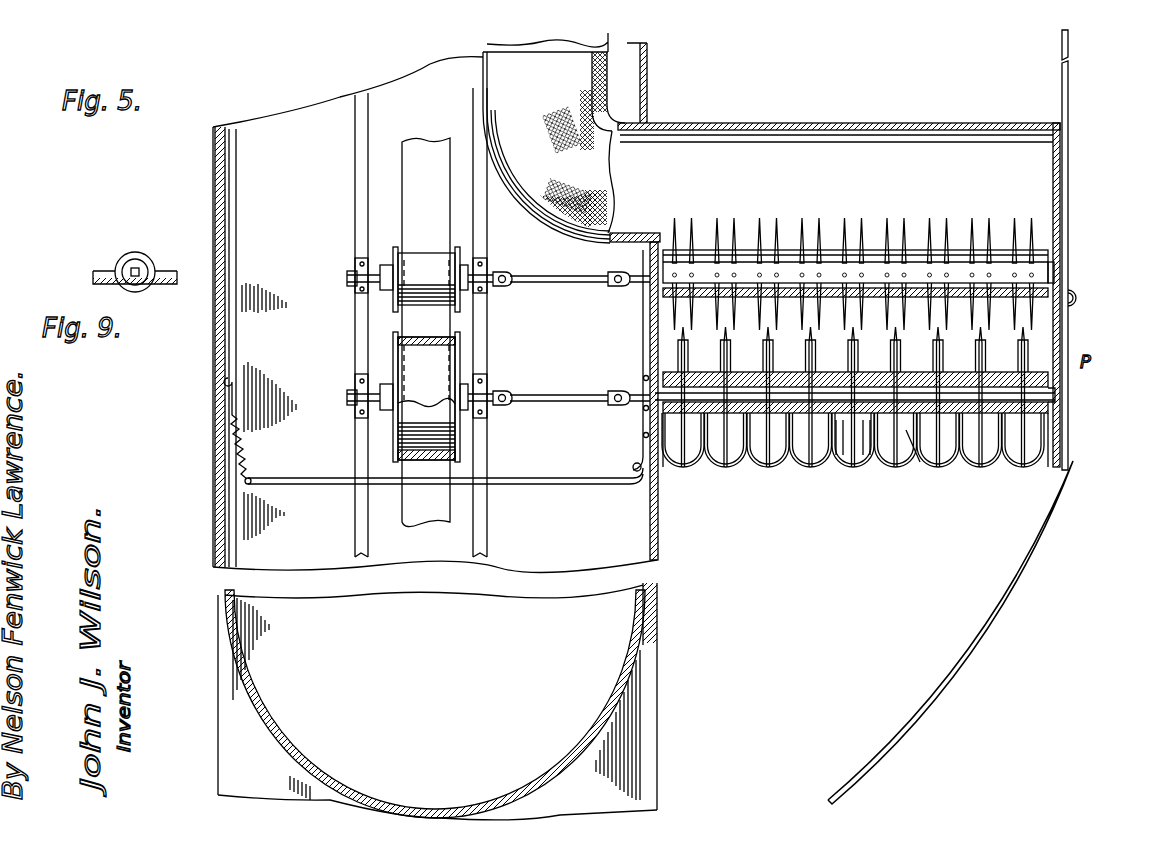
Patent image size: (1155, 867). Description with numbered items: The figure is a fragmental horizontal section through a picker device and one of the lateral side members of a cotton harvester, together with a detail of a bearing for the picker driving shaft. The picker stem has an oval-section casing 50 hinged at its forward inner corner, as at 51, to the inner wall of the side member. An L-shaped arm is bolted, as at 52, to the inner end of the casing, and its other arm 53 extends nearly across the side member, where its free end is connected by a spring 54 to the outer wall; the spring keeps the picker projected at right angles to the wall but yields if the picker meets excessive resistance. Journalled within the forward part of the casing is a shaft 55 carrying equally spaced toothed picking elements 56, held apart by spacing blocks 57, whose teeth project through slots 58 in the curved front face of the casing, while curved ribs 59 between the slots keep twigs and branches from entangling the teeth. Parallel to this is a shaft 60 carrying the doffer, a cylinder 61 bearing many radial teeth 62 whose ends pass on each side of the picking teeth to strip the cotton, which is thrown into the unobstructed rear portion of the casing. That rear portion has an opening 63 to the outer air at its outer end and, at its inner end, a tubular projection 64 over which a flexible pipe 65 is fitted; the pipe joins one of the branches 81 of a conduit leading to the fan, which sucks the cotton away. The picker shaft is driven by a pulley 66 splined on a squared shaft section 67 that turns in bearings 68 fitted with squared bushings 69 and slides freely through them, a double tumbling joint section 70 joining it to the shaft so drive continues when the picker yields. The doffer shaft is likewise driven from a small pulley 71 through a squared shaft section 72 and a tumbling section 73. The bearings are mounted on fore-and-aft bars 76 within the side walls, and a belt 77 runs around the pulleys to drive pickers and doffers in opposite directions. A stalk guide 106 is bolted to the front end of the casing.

In FIG. 5, the casing 50 is at (1063, 435).
In FIG. 5, the hinge 51 is at (648, 476).
In FIG. 5, the bolt 52 is at (650, 408).
In FIG. 5, the arm 53 is at (578, 480).
In FIG. 5, the spring 54 is at (252, 428).
In FIG. 5, the shaft 55 is at (1063, 391).
In FIG. 5, the picking elements 56 is at (1022, 466).
In FIG. 5, the spacing blocks 57 is at (916, 464).
In FIG. 5, the slots 58 is at (861, 464).
In FIG. 5, the ribs 59 is at (784, 468).
In FIG. 5, the shaft 60 is at (1066, 275).
In FIG. 5, the cylinder 61 is at (1038, 258).
In FIG. 5, the radial teeth 62 is at (934, 226).
In FIG. 5, the opening 63 is at (1066, 168).
In FIG. 5, the tubular projection 64 is at (633, 233).
In FIG. 5, the flexible pipe 65 is at (554, 147).
In FIG. 5, the pulley 66 is at (458, 368).
In FIG. 5, the shaft section 67 is at (352, 403).
In FIG. 5, the bearings 68 is at (355, 377).
In FIG. 9, the bearings 68 is at (150, 272).
In FIG. 5, the bushing 69 is at (352, 262).
In FIG. 9, the bushing 69 is at (137, 266).
In FIG. 5, the section 70 is at (585, 398).
In FIG. 5, the pulley 71 is at (458, 256).
In FIG. 5, the shaft section 72 is at (490, 288).
In FIG. 5, the tumbling section 73 is at (546, 280).
In FIG. 5, the bars 76 is at (358, 196).
In FIG. 9, the bars 76 is at (165, 283).
In FIG. 5, the belt 77 is at (440, 211).
In FIG. 5, the branches 81 is at (585, 51).
In FIG. 5, the stalk guide 106 is at (1068, 100).